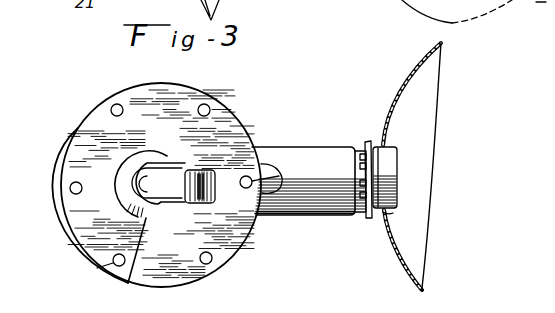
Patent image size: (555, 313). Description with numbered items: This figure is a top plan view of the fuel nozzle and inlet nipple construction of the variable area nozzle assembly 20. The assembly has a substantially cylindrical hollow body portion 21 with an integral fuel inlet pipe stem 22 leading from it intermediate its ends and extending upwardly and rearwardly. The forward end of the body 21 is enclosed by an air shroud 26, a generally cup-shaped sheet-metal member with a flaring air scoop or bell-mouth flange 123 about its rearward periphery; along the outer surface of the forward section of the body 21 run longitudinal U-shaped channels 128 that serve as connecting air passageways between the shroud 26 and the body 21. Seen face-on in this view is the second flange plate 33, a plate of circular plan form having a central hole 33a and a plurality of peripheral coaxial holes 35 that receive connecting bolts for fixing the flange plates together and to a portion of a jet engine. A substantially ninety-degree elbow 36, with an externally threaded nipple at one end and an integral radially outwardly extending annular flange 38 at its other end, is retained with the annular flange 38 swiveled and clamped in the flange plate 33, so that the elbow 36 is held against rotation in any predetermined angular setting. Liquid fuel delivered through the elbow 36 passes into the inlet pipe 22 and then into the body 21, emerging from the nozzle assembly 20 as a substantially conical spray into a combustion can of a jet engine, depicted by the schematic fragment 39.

The variable area nozzle assembly 20 is at (288, 217).
The hollow body portion 21 is at (333, 147).
The fuel inlet pipe stem 22 is at (272, 193).
The air shroud 26 is at (392, 147).
The second flange plate 33 is at (188, 90).
The hole 33a is at (129, 283).
The coaxial holes 35 is at (70, 190).
The elbow 36 is at (169, 175).
The annular flange 38 is at (156, 210).
The schematic fragment 39 is at (399, 247).
The bell-mouth flange 123 is at (368, 213).
The channels 128 is at (356, 216).